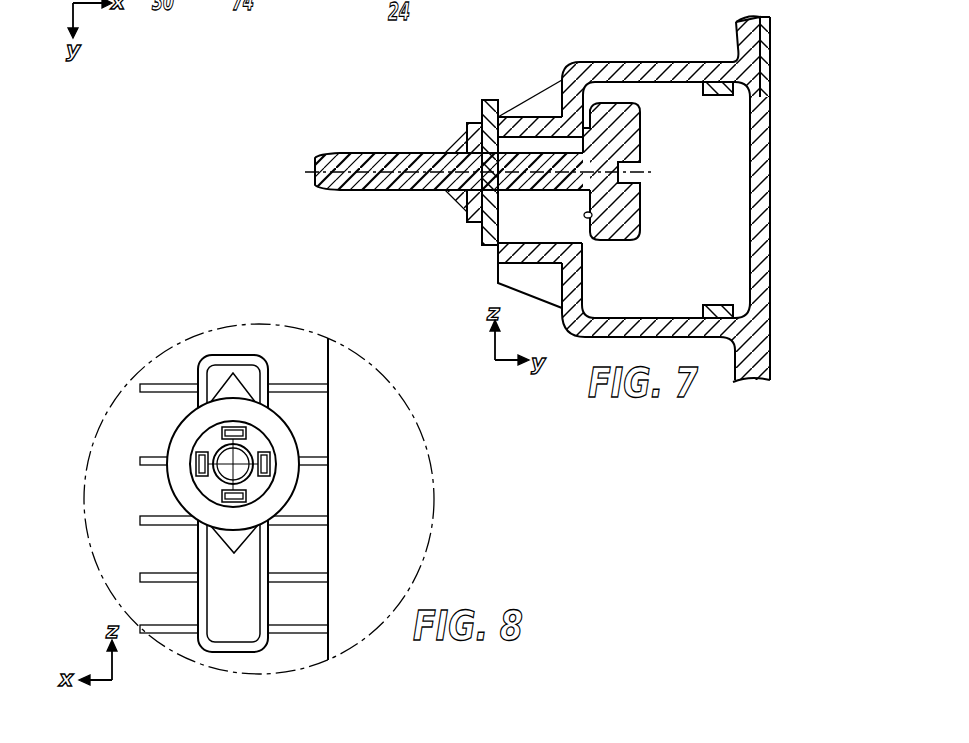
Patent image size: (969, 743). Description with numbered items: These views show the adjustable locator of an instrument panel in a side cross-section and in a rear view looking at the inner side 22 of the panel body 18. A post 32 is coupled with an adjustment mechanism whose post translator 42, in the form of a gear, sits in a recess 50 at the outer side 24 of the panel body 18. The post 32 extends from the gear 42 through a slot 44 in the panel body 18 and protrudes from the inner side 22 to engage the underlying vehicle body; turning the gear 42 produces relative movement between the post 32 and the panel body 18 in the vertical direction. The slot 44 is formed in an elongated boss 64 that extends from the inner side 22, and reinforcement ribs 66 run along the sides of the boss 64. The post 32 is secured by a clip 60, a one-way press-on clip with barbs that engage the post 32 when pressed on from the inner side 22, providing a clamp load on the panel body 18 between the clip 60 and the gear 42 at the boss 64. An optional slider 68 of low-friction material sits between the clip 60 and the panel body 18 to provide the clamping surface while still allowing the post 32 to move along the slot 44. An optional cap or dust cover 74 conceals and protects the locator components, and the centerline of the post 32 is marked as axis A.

In FIG. 7, the panel body 18 is at (735, 37).
In FIG. 7, the inner side 22 is at (603, 62).
In FIG. 8, the inner side 22 is at (312, 554).
In FIG. 7, the outer side 24 is at (773, 55).
In FIG. 7, the post 32 is at (390, 153).
In FIG. 8, the post 32 is at (223, 452).
In FIG. 7, the post translator 42 is at (623, 228).
In FIG. 8, the post translator 42 is at (224, 543).
In FIG. 7, the slot 44 is at (527, 146).
In FIG. 8, the slot 44 is at (213, 590).
In FIG. 7, the recess 50 is at (692, 92).
In FIG. 7, the clip 60 is at (472, 125).
In FIG. 8, the clip 60 is at (253, 436).
In FIG. 8, the elongated boss 64 is at (233, 360).
In FIG. 8, the reinforcement ribs 66 is at (321, 455).
In FIG. 7, the slider 68 is at (482, 231).
In FIG. 8, the slider 68 is at (180, 442).
In FIG. 7, the cap or dust cover 74 is at (750, 252).
In FIG. 7, the axis A is at (343, 170).
In FIG. 8, the axis A is at (236, 462).